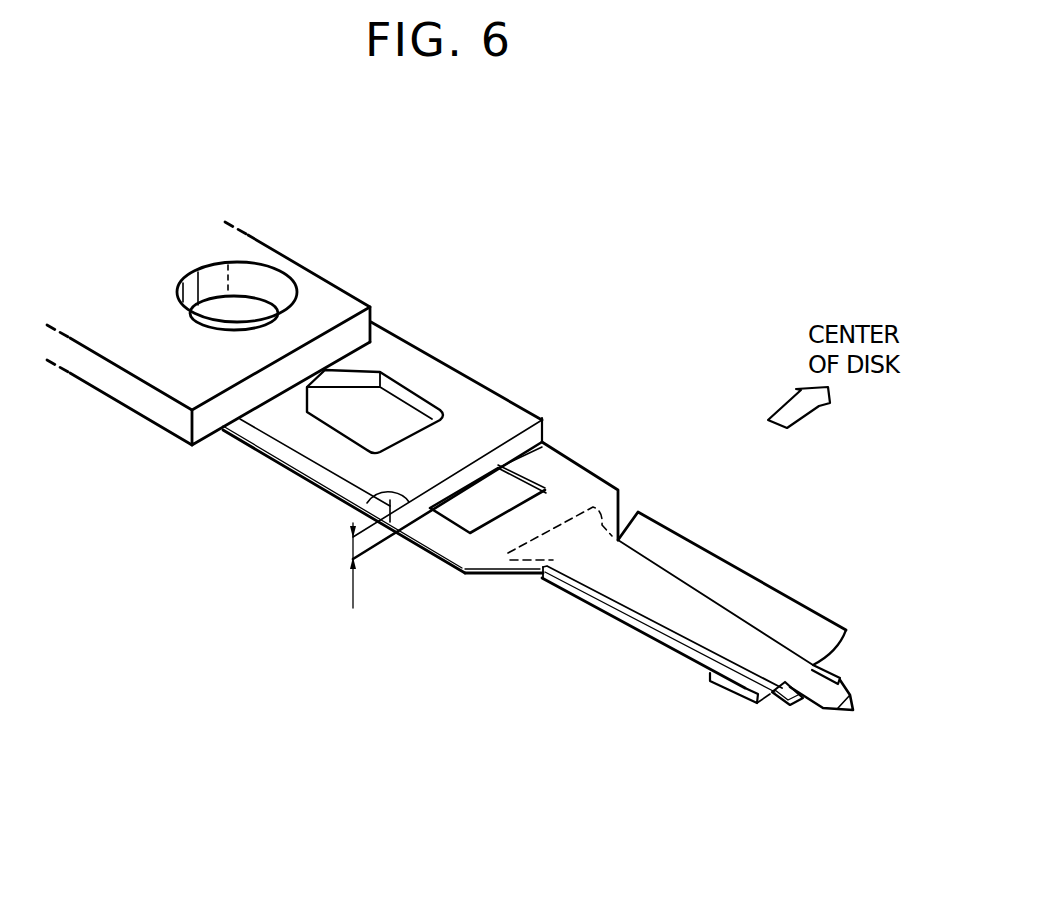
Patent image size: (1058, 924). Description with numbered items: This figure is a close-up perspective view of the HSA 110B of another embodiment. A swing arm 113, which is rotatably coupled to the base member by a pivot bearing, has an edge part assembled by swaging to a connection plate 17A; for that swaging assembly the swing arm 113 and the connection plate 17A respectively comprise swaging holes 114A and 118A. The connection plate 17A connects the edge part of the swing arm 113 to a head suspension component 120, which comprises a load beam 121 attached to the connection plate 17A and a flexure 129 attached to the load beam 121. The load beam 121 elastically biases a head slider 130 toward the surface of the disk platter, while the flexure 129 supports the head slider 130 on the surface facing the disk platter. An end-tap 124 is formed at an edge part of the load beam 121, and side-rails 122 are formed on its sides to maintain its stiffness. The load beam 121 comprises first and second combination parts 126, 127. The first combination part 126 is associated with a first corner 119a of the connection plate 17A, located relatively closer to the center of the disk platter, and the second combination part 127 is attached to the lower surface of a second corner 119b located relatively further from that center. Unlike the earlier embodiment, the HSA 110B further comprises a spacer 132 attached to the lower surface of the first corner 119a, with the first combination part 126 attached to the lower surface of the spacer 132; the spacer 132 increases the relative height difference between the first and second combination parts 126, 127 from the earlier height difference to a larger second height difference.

The swing arm 113 is at (155, 408).
The swaging hole 114A is at (247, 277).
The swaging hole 118A is at (263, 310).
The HSA 110B is at (420, 292).
The connection plate 17A is at (452, 387).
The first corner 119a is at (542, 412).
The second corner 119b is at (368, 503).
The second combination part 127 is at (428, 530).
The spacer 132 is at (543, 468).
The first combination part 126 is at (553, 460).
The side-rails 122 is at (707, 563).
The load beam 121 is at (445, 567).
The head suspension component 120 is at (484, 600).
The end-tap 124 is at (842, 702).
The head slider 130 is at (737, 692).
The flexure 129 is at (787, 707).